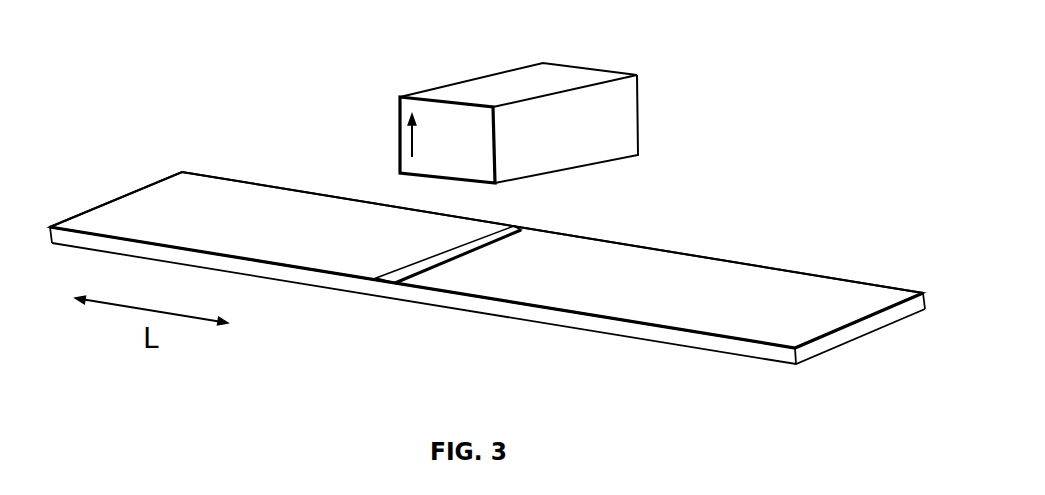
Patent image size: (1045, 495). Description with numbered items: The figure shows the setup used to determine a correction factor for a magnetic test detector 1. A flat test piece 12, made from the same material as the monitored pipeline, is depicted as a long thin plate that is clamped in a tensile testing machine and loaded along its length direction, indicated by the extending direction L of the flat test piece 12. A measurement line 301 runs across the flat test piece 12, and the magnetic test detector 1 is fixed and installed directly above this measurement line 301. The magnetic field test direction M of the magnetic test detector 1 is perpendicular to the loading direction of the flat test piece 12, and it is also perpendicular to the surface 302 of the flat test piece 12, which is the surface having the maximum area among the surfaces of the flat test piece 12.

The magnetic test detector 1 is at (638, 120).
The flat test piece 12 is at (690, 256).
The measurement line 301 is at (398, 270).
The surface 302 is at (162, 198).